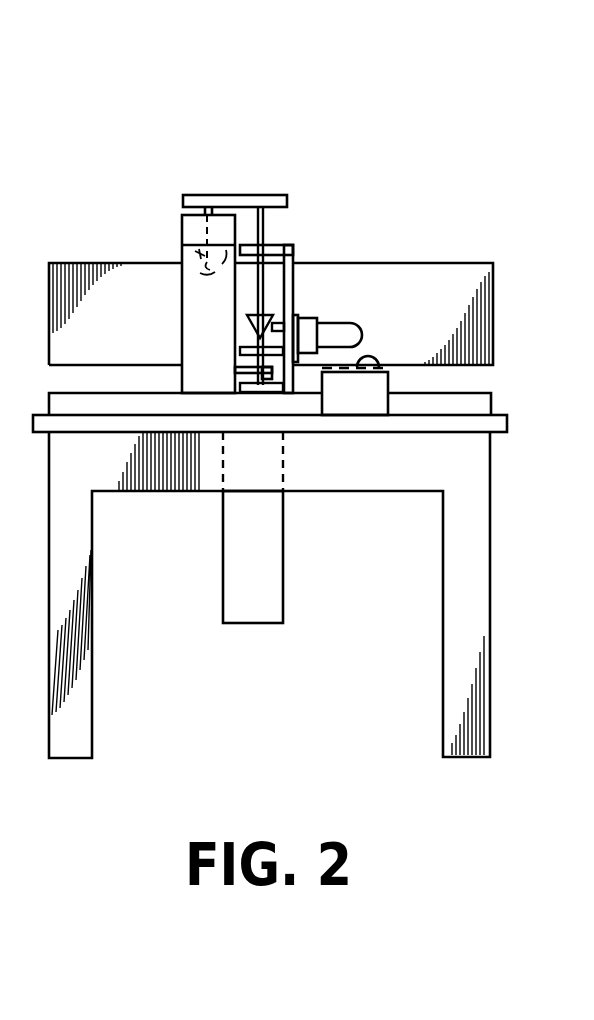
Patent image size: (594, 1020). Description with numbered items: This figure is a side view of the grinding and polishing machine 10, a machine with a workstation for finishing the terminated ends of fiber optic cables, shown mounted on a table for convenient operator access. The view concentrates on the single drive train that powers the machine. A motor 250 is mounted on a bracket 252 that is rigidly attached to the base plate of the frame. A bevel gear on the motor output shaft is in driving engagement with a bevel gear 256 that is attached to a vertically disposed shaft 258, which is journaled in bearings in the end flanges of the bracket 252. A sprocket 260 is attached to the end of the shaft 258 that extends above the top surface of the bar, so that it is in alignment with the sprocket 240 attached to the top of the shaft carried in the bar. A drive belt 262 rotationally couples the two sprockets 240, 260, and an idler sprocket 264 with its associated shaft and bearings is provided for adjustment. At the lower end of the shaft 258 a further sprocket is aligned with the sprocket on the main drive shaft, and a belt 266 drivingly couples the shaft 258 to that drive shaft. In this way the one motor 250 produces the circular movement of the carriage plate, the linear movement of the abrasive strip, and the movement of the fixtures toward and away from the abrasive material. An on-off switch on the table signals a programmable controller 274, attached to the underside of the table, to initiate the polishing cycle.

The grinding and polishing machine 10 is at (143, 104).
The sprocket 240 is at (196, 197).
The motor 250 is at (335, 334).
The bracket 252 is at (295, 253).
The bevel gear 256 is at (245, 330).
The shaft 258 is at (265, 227).
The sprocket 260 is at (272, 198).
The drive belt 262 is at (237, 195).
The idler sprocket 264 is at (273, 395).
The belt 266 is at (372, 392).
The programmable controller 274 is at (243, 605).